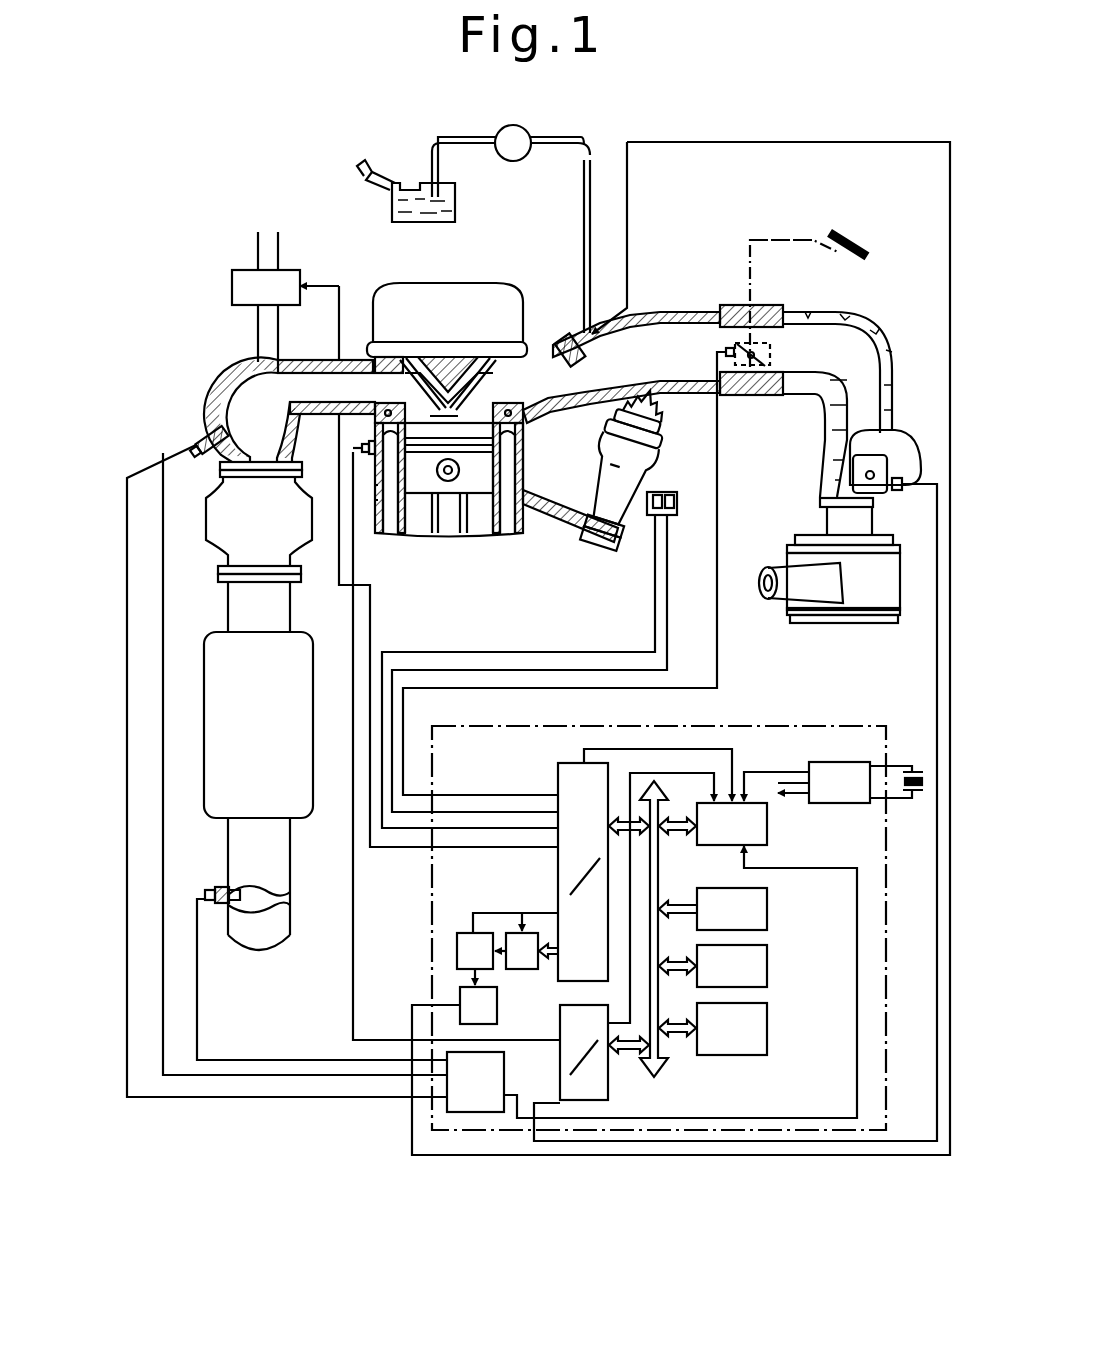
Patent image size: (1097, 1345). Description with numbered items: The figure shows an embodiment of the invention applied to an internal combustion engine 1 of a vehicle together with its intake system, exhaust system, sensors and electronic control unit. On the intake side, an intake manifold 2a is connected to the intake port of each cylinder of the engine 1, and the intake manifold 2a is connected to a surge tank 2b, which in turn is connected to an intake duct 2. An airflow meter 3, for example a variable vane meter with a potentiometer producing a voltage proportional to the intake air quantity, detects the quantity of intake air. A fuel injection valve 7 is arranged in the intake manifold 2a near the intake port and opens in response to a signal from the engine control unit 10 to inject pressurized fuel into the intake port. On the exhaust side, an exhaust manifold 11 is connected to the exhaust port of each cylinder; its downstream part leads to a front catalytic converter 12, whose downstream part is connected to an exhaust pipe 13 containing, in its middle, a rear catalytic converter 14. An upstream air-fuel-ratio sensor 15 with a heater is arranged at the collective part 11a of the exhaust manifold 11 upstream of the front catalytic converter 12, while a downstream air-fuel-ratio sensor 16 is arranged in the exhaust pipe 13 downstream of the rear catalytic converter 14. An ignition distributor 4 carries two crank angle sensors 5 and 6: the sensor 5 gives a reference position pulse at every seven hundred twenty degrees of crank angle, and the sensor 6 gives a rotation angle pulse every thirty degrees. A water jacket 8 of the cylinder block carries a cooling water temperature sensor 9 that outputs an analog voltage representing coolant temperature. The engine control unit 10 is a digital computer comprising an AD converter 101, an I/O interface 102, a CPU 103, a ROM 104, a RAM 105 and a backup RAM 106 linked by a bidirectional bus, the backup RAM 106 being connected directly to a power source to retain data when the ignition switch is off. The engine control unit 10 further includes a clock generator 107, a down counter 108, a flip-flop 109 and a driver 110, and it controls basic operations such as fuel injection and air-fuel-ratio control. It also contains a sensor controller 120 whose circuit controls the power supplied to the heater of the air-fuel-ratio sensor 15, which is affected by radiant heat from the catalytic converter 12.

The engine 1 is at (523, 302).
The intake duct 2 is at (762, 330).
The intake manifold 2a is at (650, 342).
The surge tank 2b is at (720, 320).
The airflow meter 3 is at (912, 460).
The ignition distributor 4 is at (596, 443).
The crank angle sensor 5 is at (647, 515).
The crank angle sensor 6 is at (677, 515).
The fuel injection valve 7 is at (573, 342).
The water jacket 8 is at (370, 512).
The cooling water temperature sensor 9 is at (362, 447).
The engine control unit 10 is at (888, 918).
The exhaust manifold 11 is at (290, 358).
The collective part of the exhaust manifold 11a is at (210, 420).
The front catalytic converter 12 is at (215, 538).
The exhaust pipe 13 is at (228, 603).
The rear catalytic converter 14 is at (222, 816).
The upstream air-fuel-ratio sensor 15 is at (185, 428).
The downstream air-fuel-ratio sensor 16 is at (205, 905).
The AD converter 101 is at (608, 1094).
The I/O interface 102 is at (557, 858).
The CPU 103 is at (767, 818).
The ROM 104 is at (768, 903).
The RAM 105 is at (768, 953).
The backup RAM 106 is at (768, 1019).
The clock generator 107 is at (850, 804).
The down counter 108 is at (528, 969).
The flip-flop 109 is at (472, 932).
The driver 110 is at (460, 998).
The sensor controller 120 is at (447, 1110).